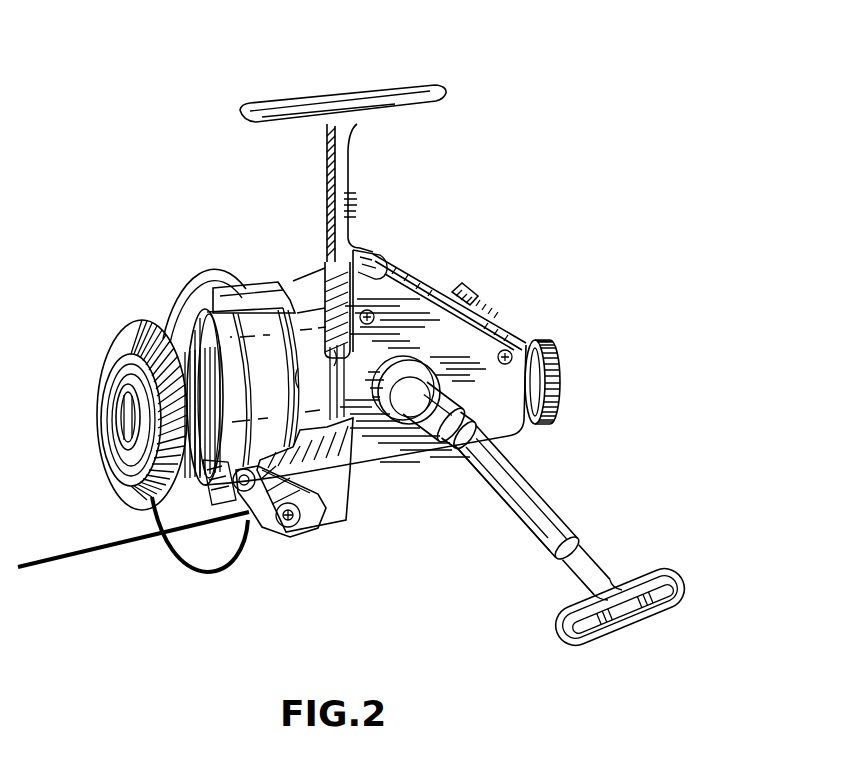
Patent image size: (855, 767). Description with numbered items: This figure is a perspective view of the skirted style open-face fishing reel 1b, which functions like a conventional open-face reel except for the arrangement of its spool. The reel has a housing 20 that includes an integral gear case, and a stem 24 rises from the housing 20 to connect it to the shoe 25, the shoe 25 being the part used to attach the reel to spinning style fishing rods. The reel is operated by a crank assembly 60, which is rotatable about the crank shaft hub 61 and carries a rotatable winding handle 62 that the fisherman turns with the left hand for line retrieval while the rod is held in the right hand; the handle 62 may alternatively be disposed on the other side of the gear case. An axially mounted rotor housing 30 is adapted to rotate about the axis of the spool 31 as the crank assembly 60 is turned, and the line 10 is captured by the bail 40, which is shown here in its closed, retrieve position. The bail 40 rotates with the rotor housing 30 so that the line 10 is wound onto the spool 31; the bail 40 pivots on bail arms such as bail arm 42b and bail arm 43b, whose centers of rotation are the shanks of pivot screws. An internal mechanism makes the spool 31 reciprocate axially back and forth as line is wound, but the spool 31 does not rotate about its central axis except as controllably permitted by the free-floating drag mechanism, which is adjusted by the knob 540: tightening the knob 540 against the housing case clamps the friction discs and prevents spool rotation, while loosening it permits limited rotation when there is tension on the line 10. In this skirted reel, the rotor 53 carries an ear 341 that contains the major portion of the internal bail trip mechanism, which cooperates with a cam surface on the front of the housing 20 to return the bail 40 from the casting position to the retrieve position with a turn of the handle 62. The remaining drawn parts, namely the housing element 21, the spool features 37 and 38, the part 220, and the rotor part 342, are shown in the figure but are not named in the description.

The line 10 is at (65, 562).
The skirted style open-face fishing reel 1b is at (518, 255).
The housing 20 is at (417, 271).
The housing side cover 21 is at (521, 443).
The stem 24 is at (357, 158).
The shoe 25 is at (393, 91).
The rotor housing 30 is at (302, 282).
The spool 31 is at (133, 330).
The spool skirt 37 is at (128, 474).
The spool hub 38 is at (120, 417).
The bail 40 is at (200, 575).
The bail arm 42b is at (207, 277).
The bail arm 43b is at (291, 538).
The rotor 53 is at (265, 376).
The crank assembly 60 is at (517, 523).
The crank shaft hub 61 is at (412, 425).
The winding handle 62 is at (684, 592).
The line clamp 220 is at (510, 318).
The ear 341 is at (267, 290).
The rotor bracket 342 is at (356, 500).
The knob 540 is at (562, 374).